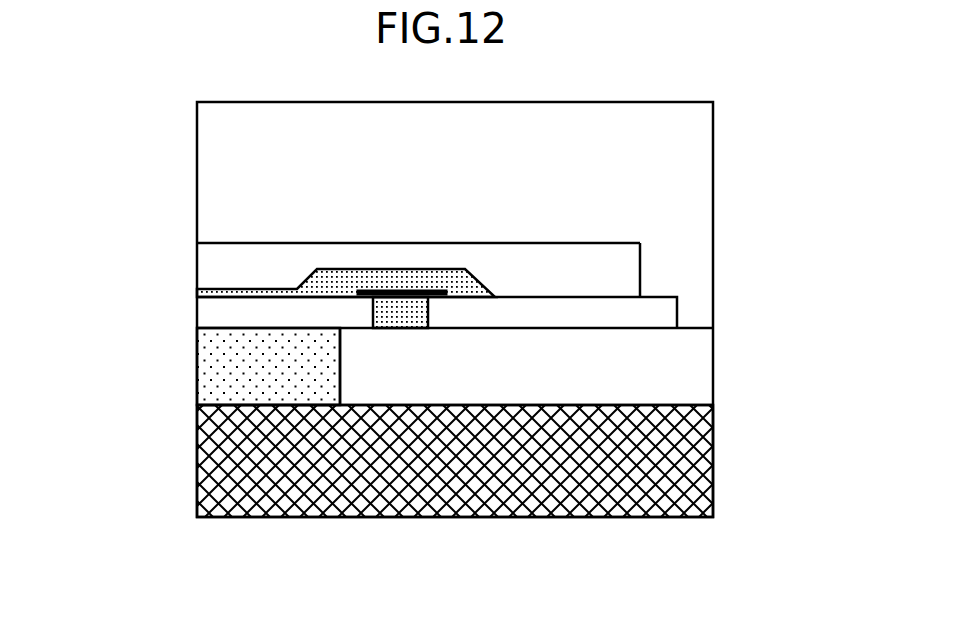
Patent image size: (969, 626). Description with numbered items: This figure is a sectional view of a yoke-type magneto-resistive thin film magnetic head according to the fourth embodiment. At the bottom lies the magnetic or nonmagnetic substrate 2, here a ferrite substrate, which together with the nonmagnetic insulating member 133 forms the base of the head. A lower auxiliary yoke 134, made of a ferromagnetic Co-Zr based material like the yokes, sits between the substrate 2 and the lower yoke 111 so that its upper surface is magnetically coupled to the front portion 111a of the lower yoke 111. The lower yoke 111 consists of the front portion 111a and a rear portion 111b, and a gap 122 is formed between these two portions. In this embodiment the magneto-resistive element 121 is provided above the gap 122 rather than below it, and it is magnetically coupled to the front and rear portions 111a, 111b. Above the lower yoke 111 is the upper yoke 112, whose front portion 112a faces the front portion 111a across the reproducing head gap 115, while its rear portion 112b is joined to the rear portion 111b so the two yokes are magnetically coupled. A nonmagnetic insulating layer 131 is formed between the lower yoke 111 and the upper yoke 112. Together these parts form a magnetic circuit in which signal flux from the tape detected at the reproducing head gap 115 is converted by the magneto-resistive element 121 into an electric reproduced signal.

The substrate 2 is at (713, 447).
The lower yoke 111 is at (452, 324).
The front portion of the lower yoke 111a is at (212, 305).
The rear portion of the lower yoke 111b is at (657, 311).
The upper yoke 112 is at (439, 266).
The front portion of the upper yoke 112a is at (217, 253).
The rear portion of the upper yoke 112b is at (640, 251).
The reproducing head gap 115 is at (215, 293).
The magneto-resistive element 121 is at (376, 292).
The gap 122 is at (403, 318).
The nonmagnetic insulating layer 131 is at (321, 284).
The nonmagnetic insulating member 133 is at (707, 373).
The lower auxiliary yoke 134 is at (212, 377).